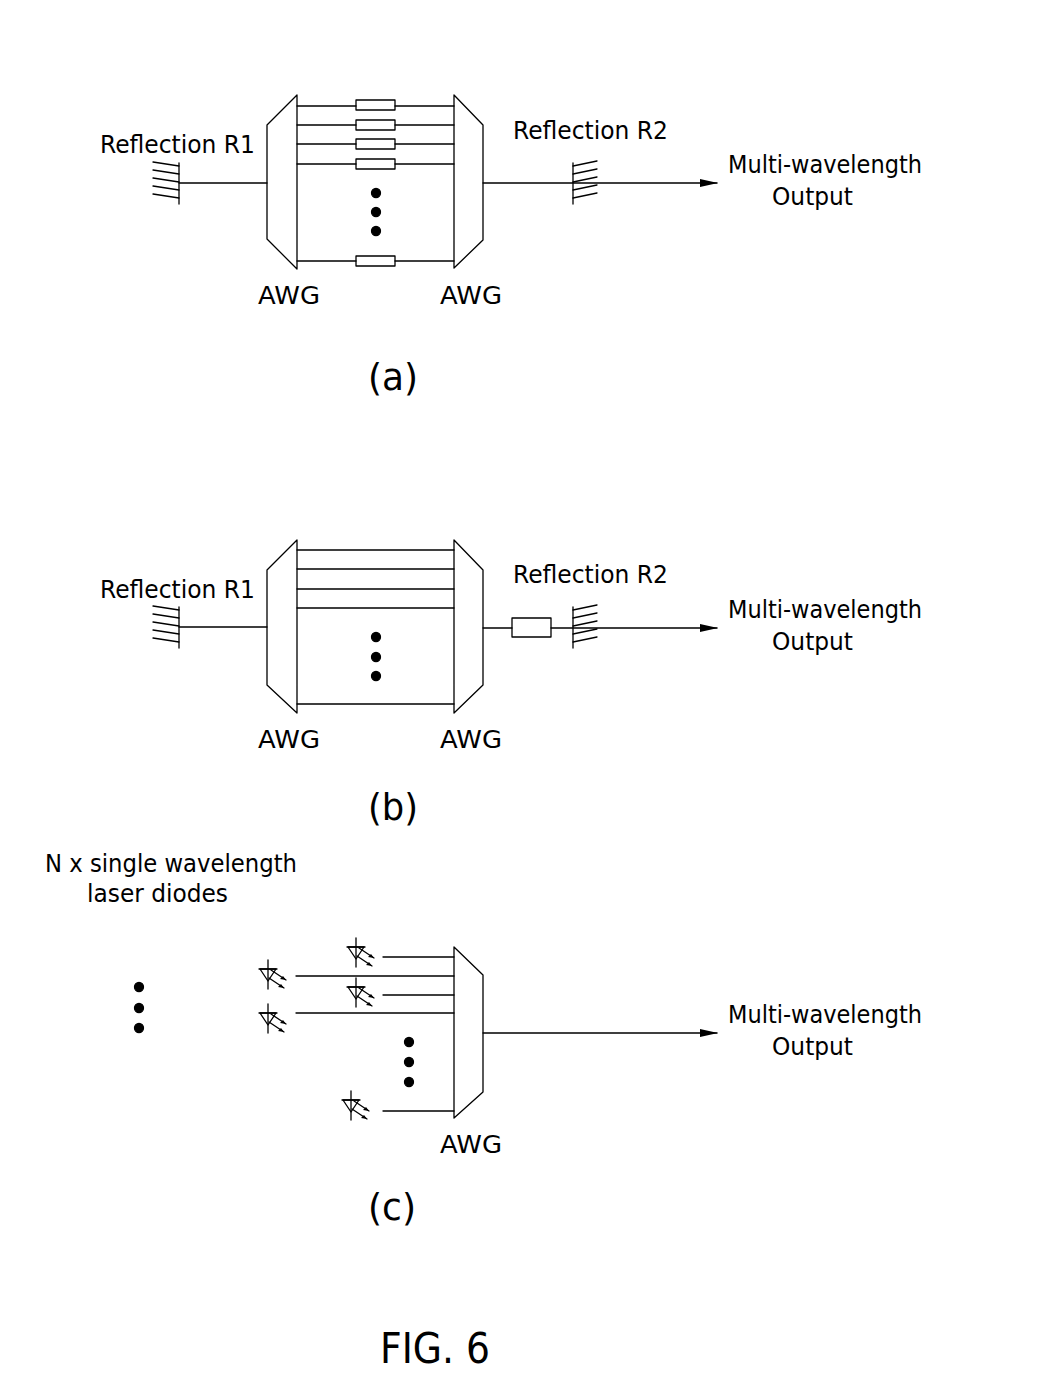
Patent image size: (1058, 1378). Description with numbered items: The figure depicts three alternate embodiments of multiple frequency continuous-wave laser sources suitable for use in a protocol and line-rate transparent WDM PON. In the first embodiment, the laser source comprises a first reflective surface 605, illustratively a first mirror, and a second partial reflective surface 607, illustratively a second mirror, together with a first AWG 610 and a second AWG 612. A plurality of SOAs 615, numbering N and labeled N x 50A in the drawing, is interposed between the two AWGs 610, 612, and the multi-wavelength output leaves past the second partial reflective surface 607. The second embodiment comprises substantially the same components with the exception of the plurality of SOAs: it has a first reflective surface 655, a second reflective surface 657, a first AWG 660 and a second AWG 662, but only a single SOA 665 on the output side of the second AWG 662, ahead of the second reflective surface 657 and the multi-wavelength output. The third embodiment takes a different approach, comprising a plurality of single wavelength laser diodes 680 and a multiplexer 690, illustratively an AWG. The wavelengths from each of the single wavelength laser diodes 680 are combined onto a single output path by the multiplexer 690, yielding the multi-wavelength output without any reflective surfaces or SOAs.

In FIG. 6a, the first AWG 610 is at (285, 107).
In FIG. 6a, the second AWG 612 is at (465, 105).
In FIG. 6a, the SOAs 615 is at (387, 100).
In FIG. 6a, the semiconductor optical amplifier elements (N x 50A) 50A is at (375, 86).
In FIG. 6a, the first reflective surface 605 is at (161, 205).
In FIG. 6a, the second partial reflective surface 607 is at (585, 205).
In FIG. 6b, the first AWG 660 is at (285, 552).
In FIG. 6b, the second AWG 662 is at (465, 550).
In FIG. 6b, the single SOA 665 is at (525, 638).
In FIG. 6b, the first reflective surface 655 is at (161, 650).
In FIG. 6b, the second reflective surface 657 is at (585, 650).
In FIG. 6c, the single wavelength laser diodes 680 is at (340, 1105).
In FIG. 6c, the multiplexer 690 is at (465, 957).